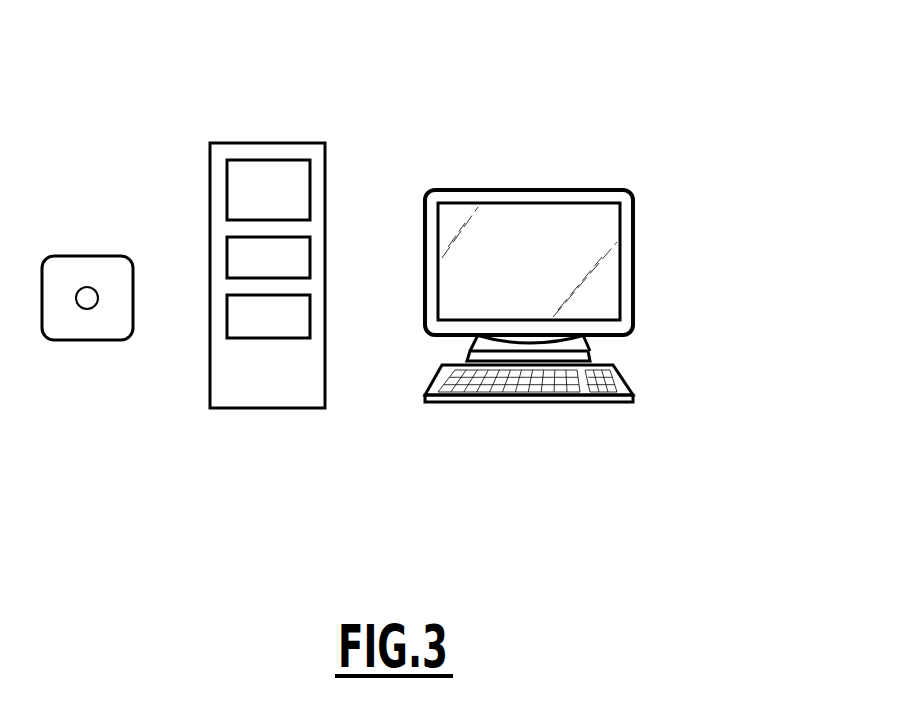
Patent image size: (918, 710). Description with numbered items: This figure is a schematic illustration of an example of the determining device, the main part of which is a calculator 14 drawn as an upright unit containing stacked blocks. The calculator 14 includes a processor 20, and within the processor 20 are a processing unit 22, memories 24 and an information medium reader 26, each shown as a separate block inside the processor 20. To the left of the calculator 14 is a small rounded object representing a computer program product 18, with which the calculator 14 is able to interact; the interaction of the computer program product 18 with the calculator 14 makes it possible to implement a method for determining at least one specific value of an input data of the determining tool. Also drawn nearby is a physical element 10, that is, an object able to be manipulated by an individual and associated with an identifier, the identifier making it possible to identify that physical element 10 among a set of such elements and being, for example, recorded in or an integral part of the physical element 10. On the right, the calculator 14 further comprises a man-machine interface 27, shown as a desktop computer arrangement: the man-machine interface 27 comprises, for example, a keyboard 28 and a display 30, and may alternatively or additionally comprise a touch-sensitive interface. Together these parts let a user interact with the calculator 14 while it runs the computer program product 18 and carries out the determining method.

The physical element 10 is at (142, 414).
The calculator 14 is at (448, 106).
The computer program product 18 is at (113, 300).
The processor 20 is at (303, 367).
The processing unit 22 is at (298, 310).
The memories 24 is at (295, 253).
The information medium reader 26 is at (293, 192).
The man-machine interface 27 is at (614, 296).
The keyboard 28 is at (622, 378).
The display 30 is at (602, 287).